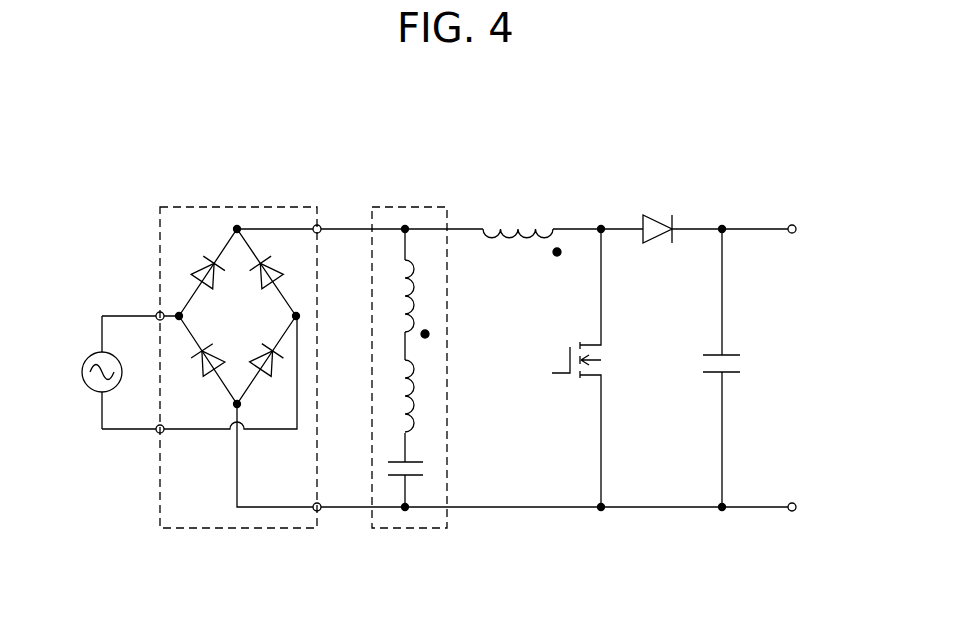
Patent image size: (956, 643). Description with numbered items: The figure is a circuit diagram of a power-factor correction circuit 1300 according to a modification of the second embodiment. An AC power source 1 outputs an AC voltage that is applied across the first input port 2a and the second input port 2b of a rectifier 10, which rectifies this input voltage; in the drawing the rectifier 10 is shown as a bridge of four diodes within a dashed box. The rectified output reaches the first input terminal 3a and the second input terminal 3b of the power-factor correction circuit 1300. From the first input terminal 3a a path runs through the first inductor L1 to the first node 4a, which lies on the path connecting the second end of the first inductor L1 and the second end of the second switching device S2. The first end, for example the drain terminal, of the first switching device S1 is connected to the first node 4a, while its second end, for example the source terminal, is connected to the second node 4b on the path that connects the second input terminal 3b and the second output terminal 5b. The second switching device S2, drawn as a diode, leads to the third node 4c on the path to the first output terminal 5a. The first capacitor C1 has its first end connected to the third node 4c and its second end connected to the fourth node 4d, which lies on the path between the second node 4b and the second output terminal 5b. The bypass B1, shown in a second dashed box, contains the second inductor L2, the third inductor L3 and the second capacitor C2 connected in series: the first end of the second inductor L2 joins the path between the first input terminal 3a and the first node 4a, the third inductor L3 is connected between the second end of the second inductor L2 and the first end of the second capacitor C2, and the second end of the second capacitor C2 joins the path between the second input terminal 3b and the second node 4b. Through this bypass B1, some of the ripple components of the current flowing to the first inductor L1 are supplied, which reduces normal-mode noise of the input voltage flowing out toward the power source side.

The power-factor correction circuit 1300 is at (469, 100).
The AC power source 1 is at (88, 356).
The first input port 2a is at (156, 314).
The second input port 2b is at (156, 432).
The rectifier 10 is at (256, 207).
The first input terminal 3a is at (320, 226).
The second input terminal 3b is at (320, 511).
The bypass B1 is at (436, 344).
The second inductor L2 is at (424, 298).
The third inductor L3 is at (424, 400).
The second capacitor C2 is at (424, 468).
The first inductor L1 is at (563, 223).
The first node 4a is at (599, 227).
The second node 4b is at (603, 510).
The first switching device S1 is at (598, 368).
The second switching device S2 is at (715, 211).
The third node 4c is at (724, 227).
The fourth node 4d is at (724, 510).
The first capacitor C1 is at (743, 368).
The first output terminal 5a is at (814, 230).
The second output terminal 5b is at (814, 507).